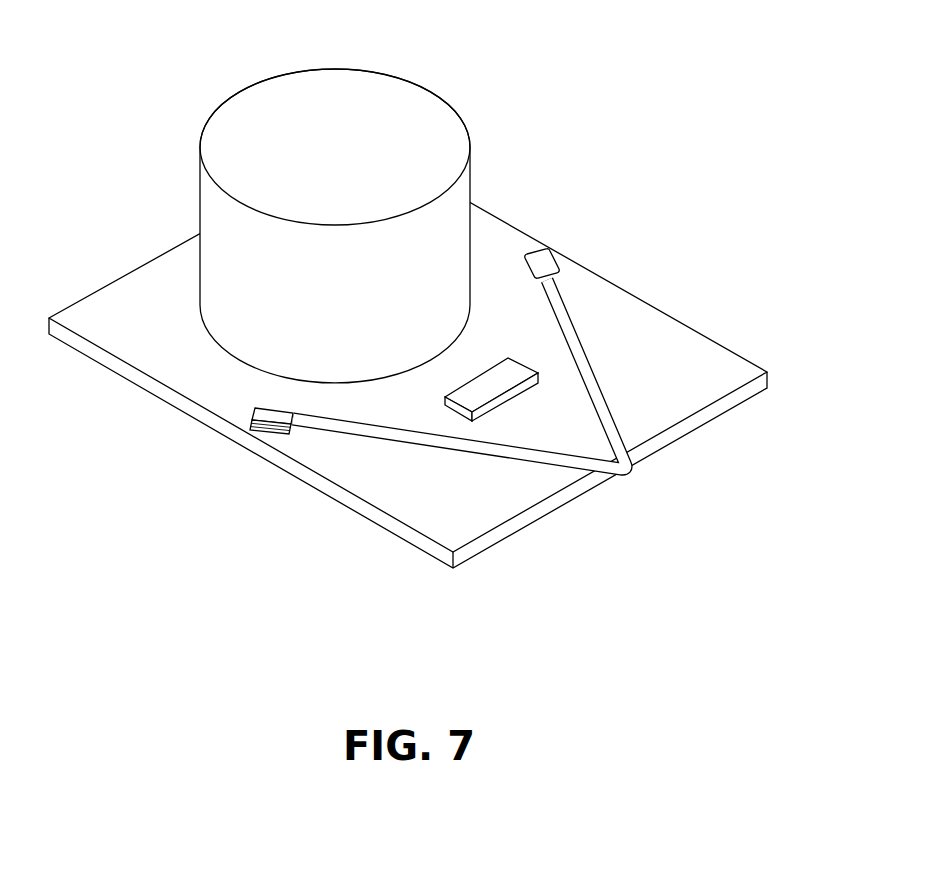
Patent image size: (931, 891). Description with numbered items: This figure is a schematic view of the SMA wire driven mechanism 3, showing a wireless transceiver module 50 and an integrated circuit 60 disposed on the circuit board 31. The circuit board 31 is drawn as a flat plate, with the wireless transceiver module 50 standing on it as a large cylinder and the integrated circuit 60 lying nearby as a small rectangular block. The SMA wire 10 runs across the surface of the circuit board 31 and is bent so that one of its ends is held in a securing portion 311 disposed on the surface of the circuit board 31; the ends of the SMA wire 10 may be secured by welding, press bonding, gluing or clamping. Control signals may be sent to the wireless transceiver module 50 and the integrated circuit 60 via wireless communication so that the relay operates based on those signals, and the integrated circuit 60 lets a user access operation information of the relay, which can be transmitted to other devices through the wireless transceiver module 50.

The SMA wire driven mechanism 3 is at (650, 90).
The SMA wire 10 is at (420, 435).
The circuit board 31 is at (690, 385).
The securing portion 311 is at (547, 258).
The wireless transceiver module 50 is at (398, 103).
The integrated circuit 60 is at (517, 370).